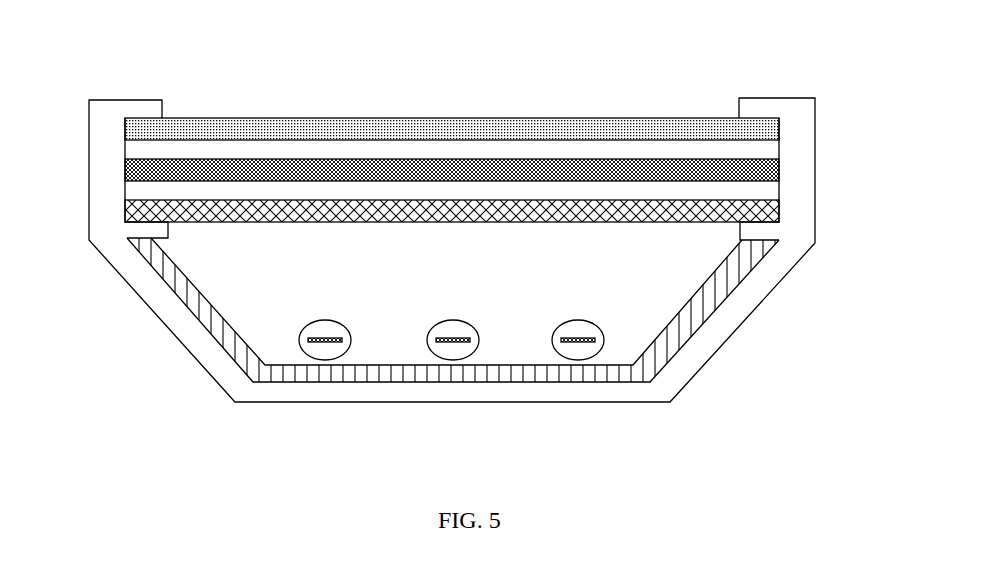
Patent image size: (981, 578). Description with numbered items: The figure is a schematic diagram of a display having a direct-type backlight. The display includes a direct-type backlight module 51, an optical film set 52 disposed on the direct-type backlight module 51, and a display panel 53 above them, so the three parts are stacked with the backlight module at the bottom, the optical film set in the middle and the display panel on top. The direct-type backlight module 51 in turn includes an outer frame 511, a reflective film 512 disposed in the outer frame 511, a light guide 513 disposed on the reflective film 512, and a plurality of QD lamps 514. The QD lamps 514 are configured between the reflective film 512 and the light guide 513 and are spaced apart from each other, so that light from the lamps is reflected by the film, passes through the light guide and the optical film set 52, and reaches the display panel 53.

The direct-type backlight module 51 is at (470, 250).
The outer frame 511 is at (790, 228).
The reflective film 512 is at (695, 297).
The light guide 513 is at (700, 197).
The QD lamps 514 is at (582, 340).
The optical film set 52 is at (433, 160).
The display panel 53 is at (538, 132).